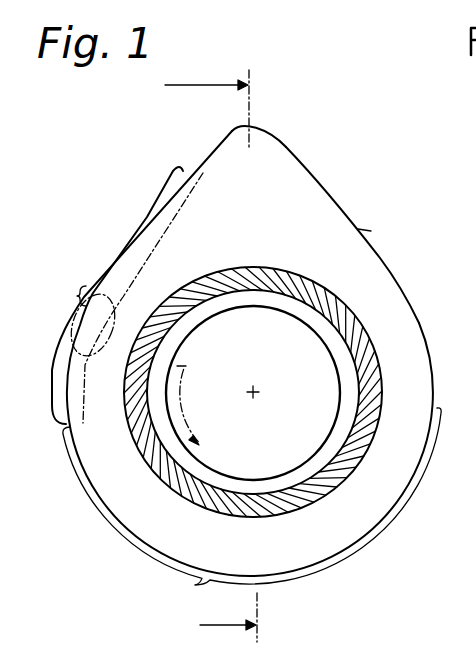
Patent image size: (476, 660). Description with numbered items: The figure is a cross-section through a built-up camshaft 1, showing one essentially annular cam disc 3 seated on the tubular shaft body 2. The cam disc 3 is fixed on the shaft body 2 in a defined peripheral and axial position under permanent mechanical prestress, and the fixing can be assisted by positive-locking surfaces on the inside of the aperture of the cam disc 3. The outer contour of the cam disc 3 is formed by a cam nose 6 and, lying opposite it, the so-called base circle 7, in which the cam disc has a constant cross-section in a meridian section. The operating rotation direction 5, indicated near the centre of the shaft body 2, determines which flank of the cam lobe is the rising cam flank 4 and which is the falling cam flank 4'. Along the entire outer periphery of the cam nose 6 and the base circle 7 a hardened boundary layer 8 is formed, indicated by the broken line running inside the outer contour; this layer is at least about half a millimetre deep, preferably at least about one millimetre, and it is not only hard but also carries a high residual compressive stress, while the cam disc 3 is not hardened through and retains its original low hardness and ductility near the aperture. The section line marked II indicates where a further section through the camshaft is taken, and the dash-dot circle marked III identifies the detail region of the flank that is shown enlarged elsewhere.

The built-up camshaft 1 is at (363, 312).
The tubular shaft body 2 is at (368, 385).
The cam disc 3 is at (394, 335).
The rising cam flank 4 is at (142, 277).
The falling cam flank 4' is at (372, 189).
The operating rotation direction 5 is at (180, 390).
The cam nose 6 is at (259, 154).
The base circle 7 is at (252, 507).
The hardened boundary layer 8 is at (161, 222).
The section line II- II is at (226, 358).
The detail III is at (107, 300).